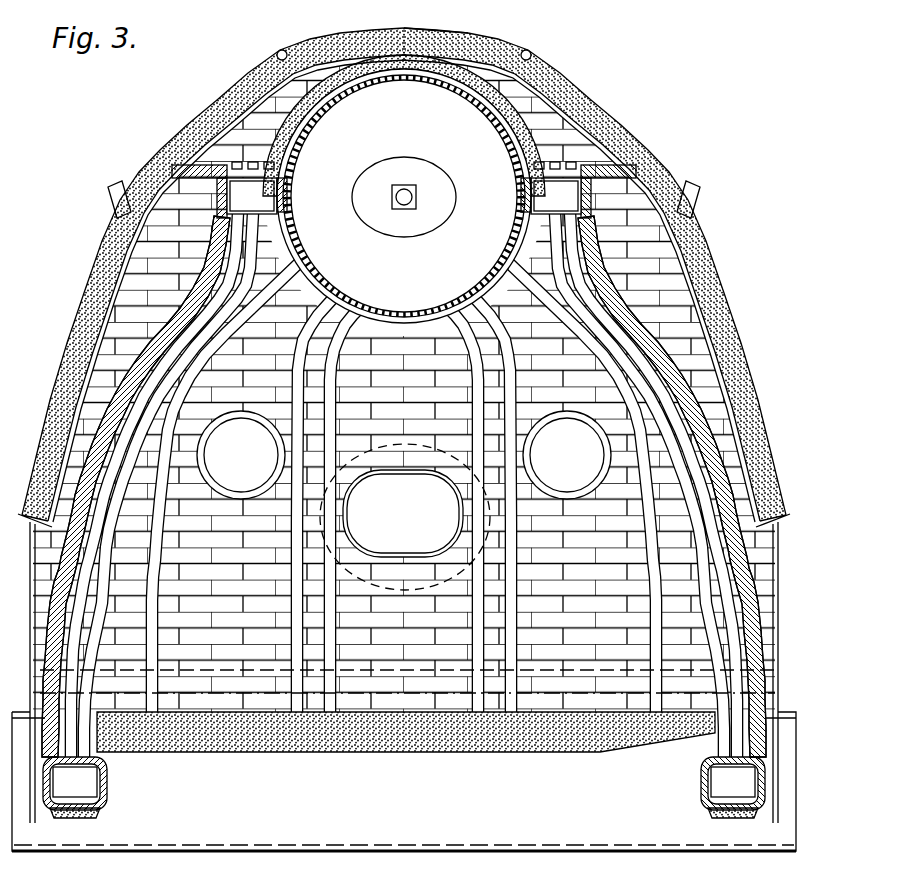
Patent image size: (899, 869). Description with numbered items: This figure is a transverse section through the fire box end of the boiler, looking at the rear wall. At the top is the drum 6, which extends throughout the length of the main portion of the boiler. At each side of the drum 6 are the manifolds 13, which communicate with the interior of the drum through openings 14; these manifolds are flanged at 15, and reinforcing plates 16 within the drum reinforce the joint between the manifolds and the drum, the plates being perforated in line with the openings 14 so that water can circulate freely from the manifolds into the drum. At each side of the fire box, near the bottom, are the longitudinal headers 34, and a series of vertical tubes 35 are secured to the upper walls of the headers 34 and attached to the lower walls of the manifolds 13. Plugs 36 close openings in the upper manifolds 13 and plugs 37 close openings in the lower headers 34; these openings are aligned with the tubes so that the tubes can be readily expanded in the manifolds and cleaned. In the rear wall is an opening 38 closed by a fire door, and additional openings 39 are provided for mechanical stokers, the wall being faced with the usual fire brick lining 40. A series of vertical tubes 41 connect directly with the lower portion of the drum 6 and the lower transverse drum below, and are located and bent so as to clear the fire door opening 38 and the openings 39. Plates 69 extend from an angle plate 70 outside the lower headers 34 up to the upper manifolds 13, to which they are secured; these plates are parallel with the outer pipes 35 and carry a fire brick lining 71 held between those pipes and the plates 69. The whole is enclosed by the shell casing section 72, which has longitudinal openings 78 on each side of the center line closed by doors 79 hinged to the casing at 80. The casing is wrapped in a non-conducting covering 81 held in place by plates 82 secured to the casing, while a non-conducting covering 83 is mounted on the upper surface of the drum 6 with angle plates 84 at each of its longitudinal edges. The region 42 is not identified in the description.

The drum 6 is at (404, 196).
The manifolds 13 is at (404, 191).
The openings 14 is at (288, 198).
The flange 15 is at (302, 157).
The reinforcing plates 16 is at (290, 176).
The longitudinal headers 34 is at (92, 784).
The vertical tubes 35 is at (128, 451).
The plugs 36 is at (262, 161).
The plugs 37 is at (60, 812).
The opening 38 is at (405, 517).
The openings 39 is at (404, 455).
The fire brick lining 40 is at (248, 685).
The vertical tubes 41 is at (158, 539).
The foundation 42 is at (570, 693).
The plates 69 is at (640, 764).
The angle plate 70 is at (762, 768).
The fire brick lining 71 is at (54, 416).
The casing section 72 is at (106, 331).
The longitudinal openings 78 is at (217, 88).
The doors 79 is at (162, 136).
The hinge 80 is at (278, 52).
The non-conducting covering 81 is at (74, 341).
The plates 82 is at (414, 291).
The non-conducting covering 83 is at (472, 46).
The angle plates 84 is at (272, 135).